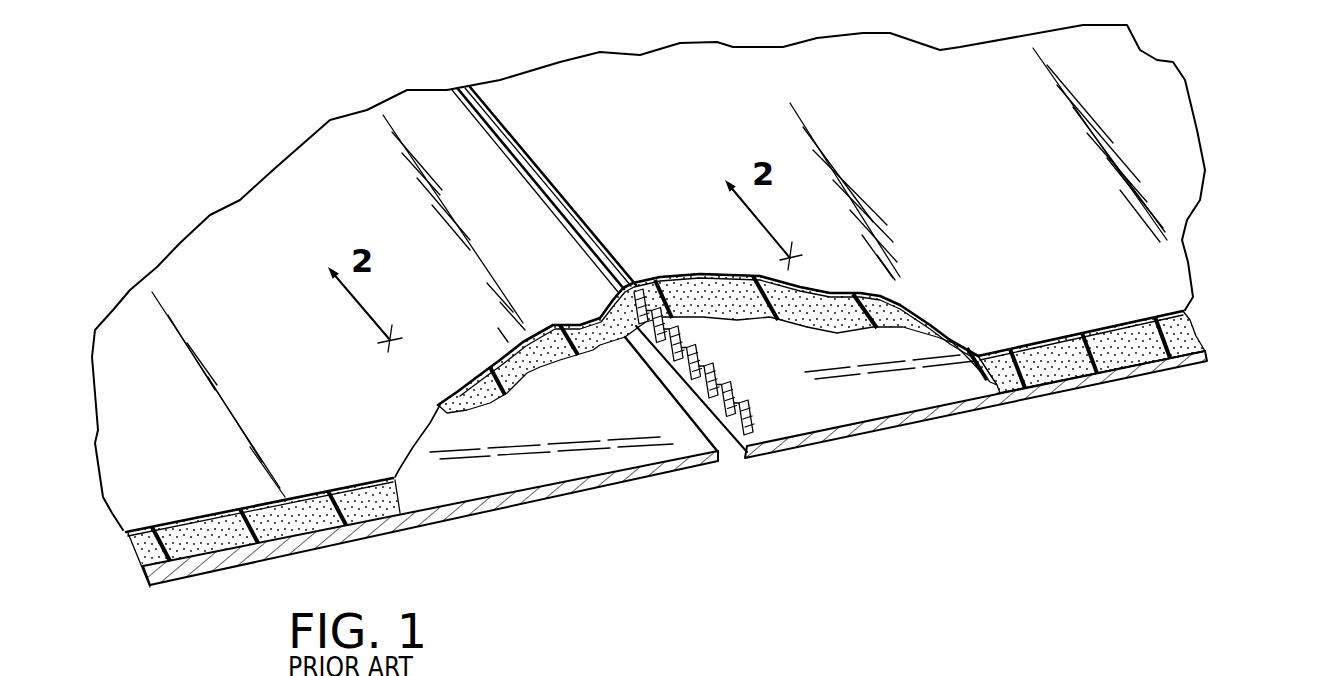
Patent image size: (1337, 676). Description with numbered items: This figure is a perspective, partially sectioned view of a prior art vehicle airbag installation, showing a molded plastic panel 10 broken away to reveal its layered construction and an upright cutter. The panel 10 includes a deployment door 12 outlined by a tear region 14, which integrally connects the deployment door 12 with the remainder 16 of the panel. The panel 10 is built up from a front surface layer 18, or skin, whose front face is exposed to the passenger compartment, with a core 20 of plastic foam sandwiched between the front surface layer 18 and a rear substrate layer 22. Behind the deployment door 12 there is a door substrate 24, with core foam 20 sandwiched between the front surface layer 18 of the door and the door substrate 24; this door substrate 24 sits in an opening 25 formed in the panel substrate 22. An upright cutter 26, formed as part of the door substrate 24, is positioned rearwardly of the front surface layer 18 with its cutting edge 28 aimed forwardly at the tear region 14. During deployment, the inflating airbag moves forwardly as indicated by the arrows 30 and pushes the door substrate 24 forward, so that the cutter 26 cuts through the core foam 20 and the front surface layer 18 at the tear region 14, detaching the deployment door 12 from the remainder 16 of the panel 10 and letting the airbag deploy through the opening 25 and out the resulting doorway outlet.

The molded plastic panel 10 is at (1215, 138).
The deployment door 12 is at (905, 155).
The tear region 14 is at (573, 197).
The remainder of the panel 16 is at (278, 287).
The front surface layer 18 is at (498, 362).
The core 20 is at (230, 538).
The rear substrate layer 22 is at (475, 523).
The door substrate 24 is at (1110, 382).
The opening 25 is at (690, 407).
The upright cutter 26 is at (745, 386).
The cutting edge 28 is at (690, 352).
The arrows 30 is at (767, 477).